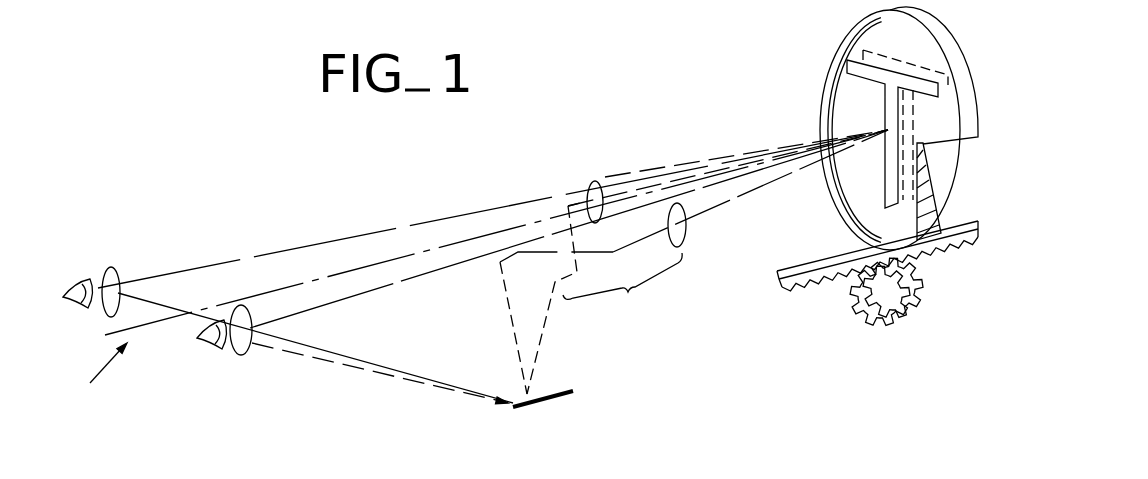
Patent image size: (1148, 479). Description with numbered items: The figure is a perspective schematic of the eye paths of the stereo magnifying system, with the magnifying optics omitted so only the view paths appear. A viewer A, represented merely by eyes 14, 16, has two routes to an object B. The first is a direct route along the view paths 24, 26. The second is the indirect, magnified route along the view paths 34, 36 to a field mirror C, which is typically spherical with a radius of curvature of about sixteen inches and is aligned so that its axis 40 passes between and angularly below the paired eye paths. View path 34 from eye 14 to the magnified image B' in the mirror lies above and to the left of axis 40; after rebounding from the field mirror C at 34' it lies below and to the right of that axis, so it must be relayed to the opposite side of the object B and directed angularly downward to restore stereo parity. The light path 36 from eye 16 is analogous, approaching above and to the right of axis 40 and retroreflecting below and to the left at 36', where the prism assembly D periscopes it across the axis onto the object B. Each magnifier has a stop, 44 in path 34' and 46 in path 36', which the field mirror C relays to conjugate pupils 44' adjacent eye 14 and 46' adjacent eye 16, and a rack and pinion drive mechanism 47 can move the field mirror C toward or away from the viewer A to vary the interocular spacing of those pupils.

The eye 14 is at (84, 286).
The eye 16 is at (213, 345).
The view path 24 is at (334, 350).
The view path 26 is at (390, 380).
The view path 34 is at (493, 209).
The light path 34' is at (694, 196).
The view path 36 is at (569, 229).
The light path 36' is at (728, 160).
The axis 40 is at (482, 236).
The magnifier stop 44 is at (701, 244).
The relayed magnifier stop 44' is at (142, 265).
The magnifier stop 46 is at (602, 171).
The relayed magnifier stop 46' is at (261, 364).
The rack and pinion drive mechanism 47 is at (903, 290).
The viewer A is at (98, 375).
The object B is at (553, 418).
The magnified image B' is at (879, 154).
The field mirror C is at (853, 35).
The prism assembly D is at (622, 289).